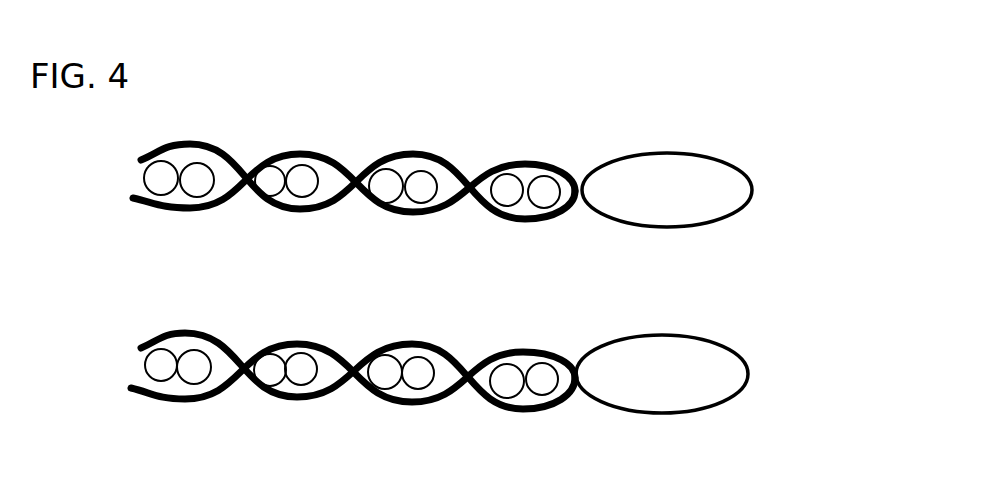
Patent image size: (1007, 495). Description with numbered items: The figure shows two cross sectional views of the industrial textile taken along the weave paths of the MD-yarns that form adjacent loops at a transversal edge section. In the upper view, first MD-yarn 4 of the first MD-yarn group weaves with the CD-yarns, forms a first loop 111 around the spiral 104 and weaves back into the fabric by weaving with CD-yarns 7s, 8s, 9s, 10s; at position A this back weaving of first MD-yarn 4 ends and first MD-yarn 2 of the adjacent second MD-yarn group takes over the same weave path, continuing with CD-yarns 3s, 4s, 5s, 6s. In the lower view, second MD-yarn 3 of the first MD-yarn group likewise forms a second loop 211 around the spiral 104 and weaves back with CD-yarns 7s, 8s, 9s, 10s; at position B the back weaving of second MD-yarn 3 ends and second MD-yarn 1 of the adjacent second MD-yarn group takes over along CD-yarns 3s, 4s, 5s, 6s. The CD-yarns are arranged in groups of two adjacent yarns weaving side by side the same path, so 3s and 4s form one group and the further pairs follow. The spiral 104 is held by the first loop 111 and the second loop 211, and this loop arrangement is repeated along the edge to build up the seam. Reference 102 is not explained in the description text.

The second MD-yarn 1 is at (182, 140).
The first MD-yarn 2 is at (200, 332).
The second MD-yarn 3 is at (527, 160).
The first MD-yarn 4 is at (522, 410).
The position A is at (353, 160).
The position B is at (375, 298).
The woven structure 102 is at (536, 61).
The spiral 104 is at (860, 188).
The CD-yarn 3s is at (155, 197).
The CD-yarn 4s is at (198, 197).
The CD-yarn 5s is at (268, 197).
The CD-yarn 6s is at (303, 197).
The CD-yarn 7s is at (378, 203).
The CD-yarn 8s is at (425, 352).
The CD-yarn 9s is at (508, 345).
The CD-yarn 10s is at (555, 350).
The second loop 211 is at (586, 183).
The first loop 111 is at (586, 368).